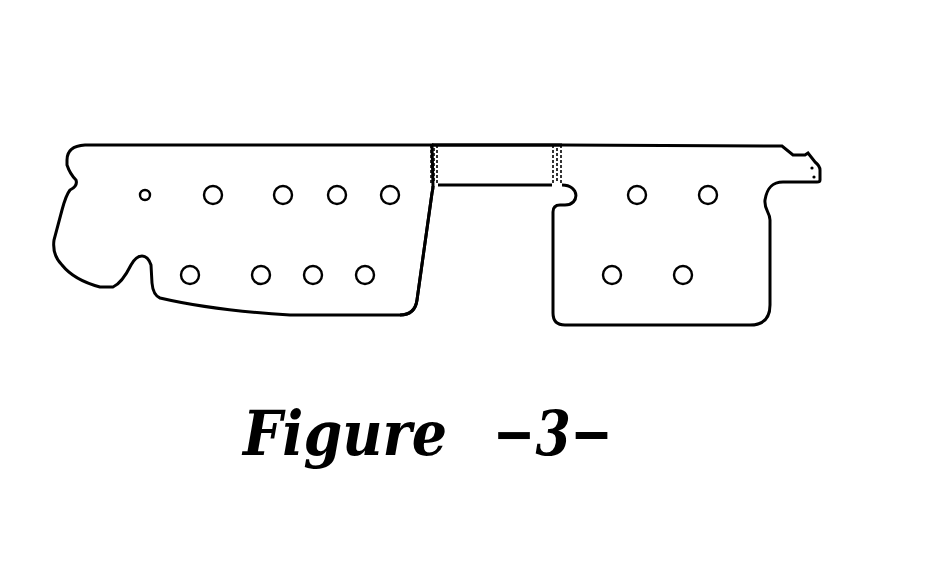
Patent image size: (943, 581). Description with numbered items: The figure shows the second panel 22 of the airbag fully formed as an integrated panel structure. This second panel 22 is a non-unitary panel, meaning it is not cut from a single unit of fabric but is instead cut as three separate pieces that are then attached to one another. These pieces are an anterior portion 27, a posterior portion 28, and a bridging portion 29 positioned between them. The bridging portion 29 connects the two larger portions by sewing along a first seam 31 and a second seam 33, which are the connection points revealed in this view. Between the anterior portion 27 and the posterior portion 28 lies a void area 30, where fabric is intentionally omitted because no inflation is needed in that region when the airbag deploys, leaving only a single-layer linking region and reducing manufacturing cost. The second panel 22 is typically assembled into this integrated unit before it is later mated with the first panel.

The second panel 22 is at (675, 72).
The anterior portion 27 is at (673, 155).
The posterior portion 28 is at (178, 155).
The bridging portion 29 is at (475, 160).
The void area 30 is at (467, 282).
The first seam 31 is at (418, 163).
The second seam 33 is at (570, 160).